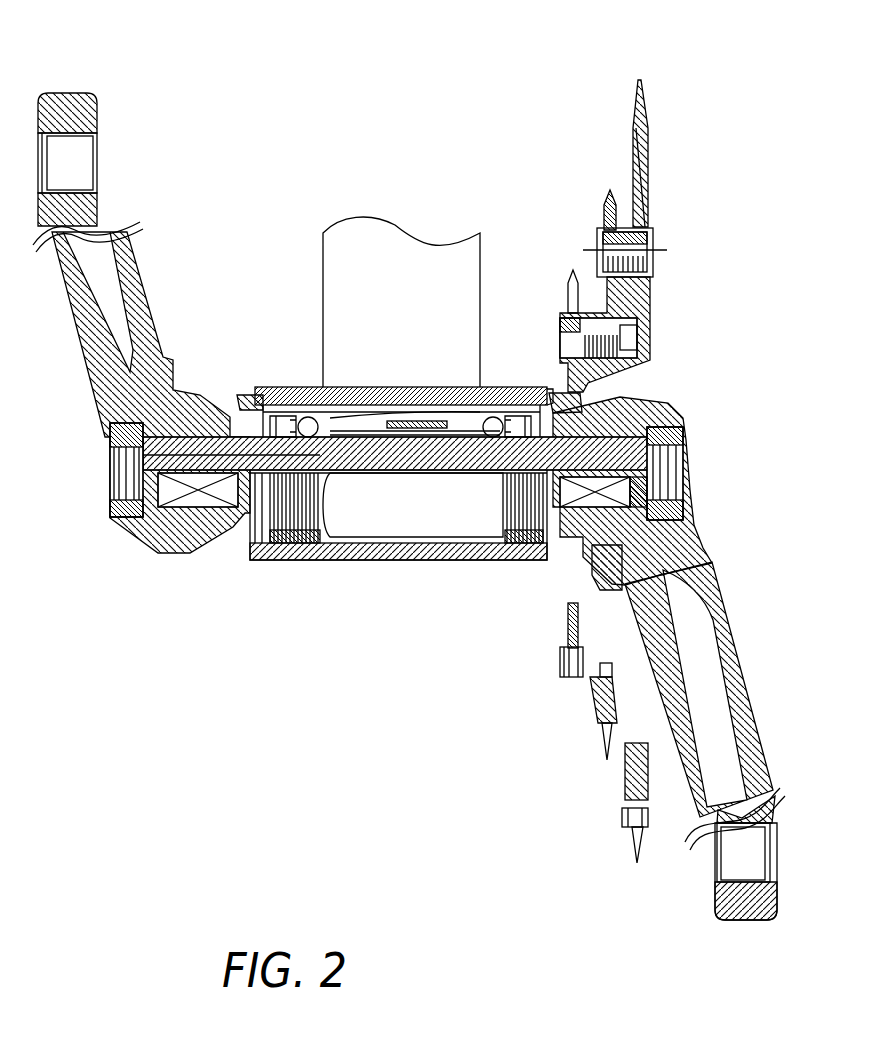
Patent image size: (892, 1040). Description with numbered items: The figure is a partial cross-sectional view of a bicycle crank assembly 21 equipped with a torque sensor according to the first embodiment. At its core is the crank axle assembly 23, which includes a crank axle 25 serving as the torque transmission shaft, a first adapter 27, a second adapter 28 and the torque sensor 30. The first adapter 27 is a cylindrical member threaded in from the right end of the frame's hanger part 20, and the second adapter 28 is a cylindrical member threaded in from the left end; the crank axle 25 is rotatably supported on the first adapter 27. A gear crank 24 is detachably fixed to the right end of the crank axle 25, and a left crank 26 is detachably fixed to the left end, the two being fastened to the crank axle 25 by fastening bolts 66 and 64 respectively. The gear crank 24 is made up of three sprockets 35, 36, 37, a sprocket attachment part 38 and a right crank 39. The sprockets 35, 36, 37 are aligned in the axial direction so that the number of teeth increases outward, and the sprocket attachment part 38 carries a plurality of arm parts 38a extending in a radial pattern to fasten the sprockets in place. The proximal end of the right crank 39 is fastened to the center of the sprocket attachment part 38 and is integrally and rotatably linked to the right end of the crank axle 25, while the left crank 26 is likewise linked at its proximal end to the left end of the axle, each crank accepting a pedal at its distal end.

The hanger part 20 is at (410, 387).
The crank assembly 21 is at (629, 196).
The crank axle assembly 23 is at (288, 371).
The gear crank 24 is at (705, 486).
The crank axle 25 is at (232, 405).
The left crank 26 is at (82, 388).
The first adapter 27 is at (345, 387).
The second adapter 28 is at (250, 395).
The torque sensor 30 is at (392, 387).
The sprocket 35 is at (572, 272).
The sprocket 36 is at (608, 193).
The sprocket 37 is at (640, 83).
The sprocket attachment part 38 is at (660, 341).
The arm part 38a is at (653, 293).
The right crank 39 is at (703, 545).
The fastening bolt 64 is at (122, 497).
The fastening bolt 66 is at (683, 414).